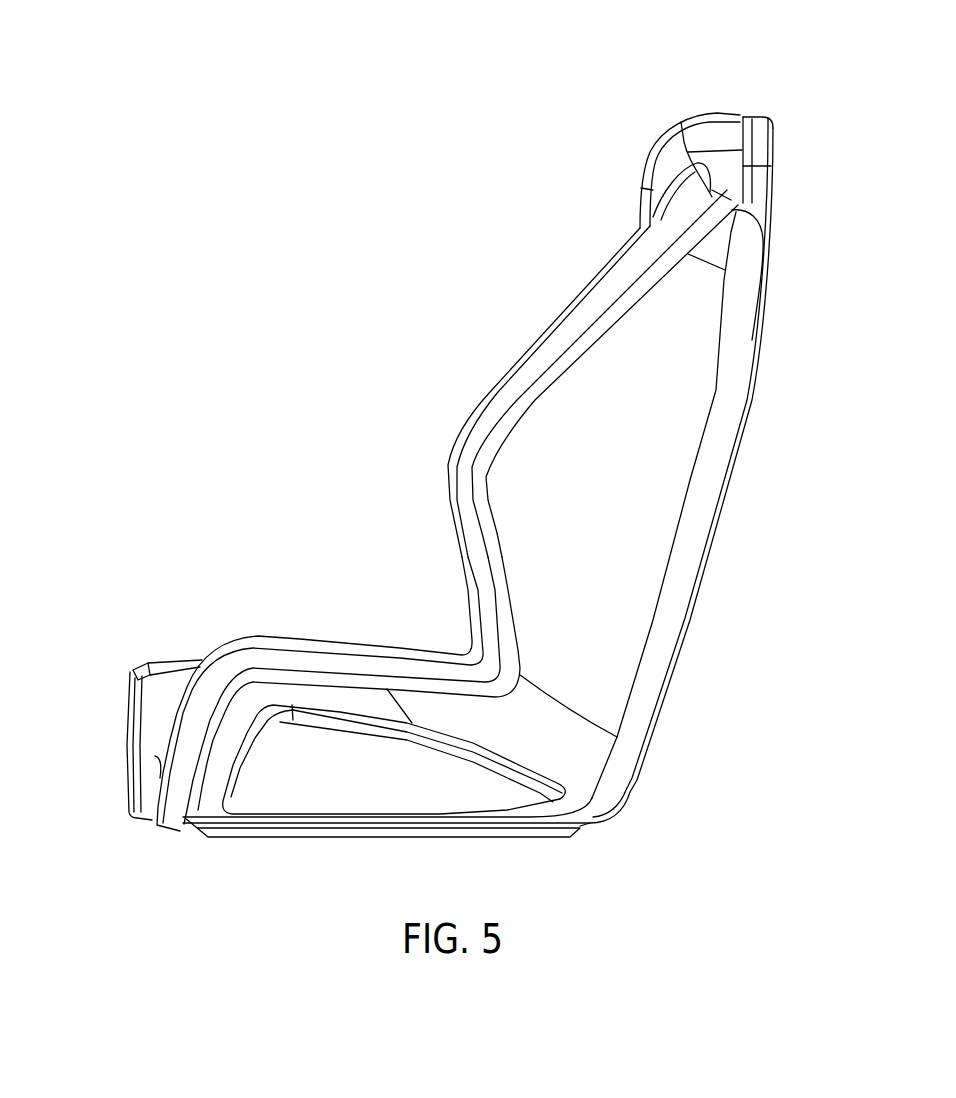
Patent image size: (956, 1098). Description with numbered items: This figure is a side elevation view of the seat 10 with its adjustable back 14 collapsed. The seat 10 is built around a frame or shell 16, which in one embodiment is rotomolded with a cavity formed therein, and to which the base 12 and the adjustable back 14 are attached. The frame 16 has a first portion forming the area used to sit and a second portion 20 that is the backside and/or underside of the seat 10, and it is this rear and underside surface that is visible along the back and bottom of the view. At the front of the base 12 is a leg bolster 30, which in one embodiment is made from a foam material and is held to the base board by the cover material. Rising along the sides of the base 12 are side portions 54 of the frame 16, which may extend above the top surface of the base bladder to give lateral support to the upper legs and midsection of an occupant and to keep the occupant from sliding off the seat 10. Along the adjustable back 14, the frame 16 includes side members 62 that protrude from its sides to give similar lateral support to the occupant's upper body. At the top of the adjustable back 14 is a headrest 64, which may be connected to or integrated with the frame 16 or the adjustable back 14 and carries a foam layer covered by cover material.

The seat 10 is at (430, 135).
The base 12 is at (93, 650).
The adjustable back 14 is at (483, 299).
The frame 16 is at (668, 532).
The second portion 20 is at (765, 500).
The leg bolster 30 is at (166, 690).
The side portions 54 is at (273, 647).
The side members 62 is at (533, 418).
The headrest 64 is at (666, 147).